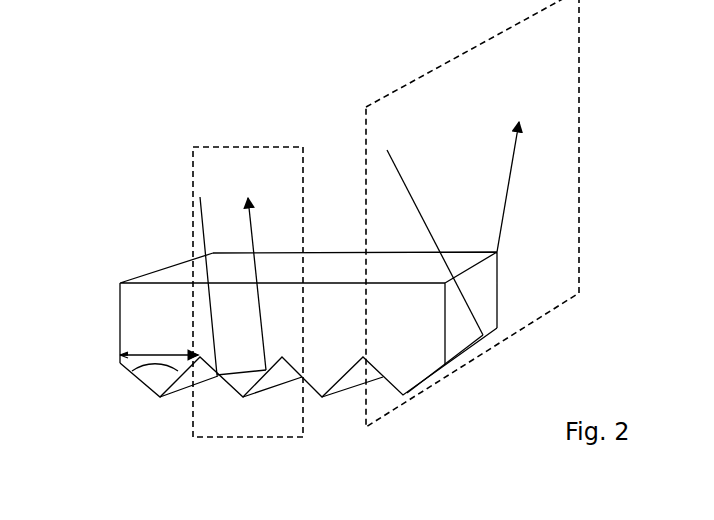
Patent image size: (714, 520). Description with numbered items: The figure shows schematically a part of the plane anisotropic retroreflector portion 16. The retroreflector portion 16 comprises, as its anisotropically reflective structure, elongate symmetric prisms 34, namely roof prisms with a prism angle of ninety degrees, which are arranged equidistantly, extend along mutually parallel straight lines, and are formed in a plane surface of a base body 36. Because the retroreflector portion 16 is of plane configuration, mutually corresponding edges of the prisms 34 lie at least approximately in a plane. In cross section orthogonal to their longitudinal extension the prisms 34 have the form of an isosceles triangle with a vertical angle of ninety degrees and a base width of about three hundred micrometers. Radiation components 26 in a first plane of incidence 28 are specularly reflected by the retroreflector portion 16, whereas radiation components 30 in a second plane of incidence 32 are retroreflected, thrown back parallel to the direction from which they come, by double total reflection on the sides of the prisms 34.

The retroreflector portion 16 is at (143, 300).
The radiation components 26 is at (503, 218).
The first plane of incidence 28 is at (560, 87).
The radiation components 30 is at (200, 235).
The second plane of incidence 32 is at (202, 158).
The prisms 34 is at (272, 383).
The base body 36 is at (427, 330).